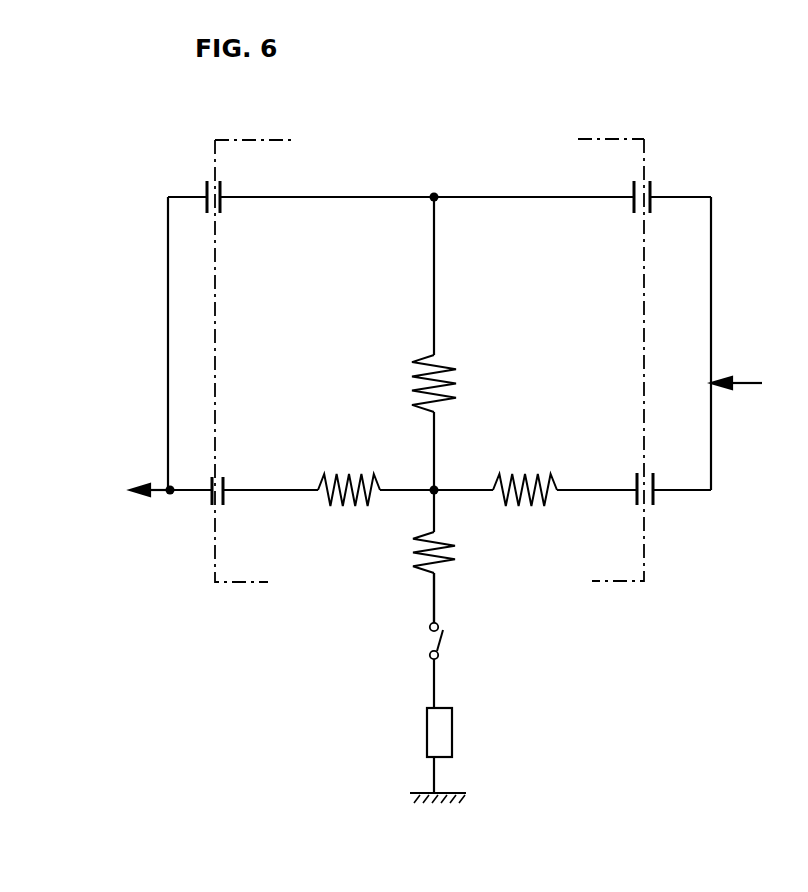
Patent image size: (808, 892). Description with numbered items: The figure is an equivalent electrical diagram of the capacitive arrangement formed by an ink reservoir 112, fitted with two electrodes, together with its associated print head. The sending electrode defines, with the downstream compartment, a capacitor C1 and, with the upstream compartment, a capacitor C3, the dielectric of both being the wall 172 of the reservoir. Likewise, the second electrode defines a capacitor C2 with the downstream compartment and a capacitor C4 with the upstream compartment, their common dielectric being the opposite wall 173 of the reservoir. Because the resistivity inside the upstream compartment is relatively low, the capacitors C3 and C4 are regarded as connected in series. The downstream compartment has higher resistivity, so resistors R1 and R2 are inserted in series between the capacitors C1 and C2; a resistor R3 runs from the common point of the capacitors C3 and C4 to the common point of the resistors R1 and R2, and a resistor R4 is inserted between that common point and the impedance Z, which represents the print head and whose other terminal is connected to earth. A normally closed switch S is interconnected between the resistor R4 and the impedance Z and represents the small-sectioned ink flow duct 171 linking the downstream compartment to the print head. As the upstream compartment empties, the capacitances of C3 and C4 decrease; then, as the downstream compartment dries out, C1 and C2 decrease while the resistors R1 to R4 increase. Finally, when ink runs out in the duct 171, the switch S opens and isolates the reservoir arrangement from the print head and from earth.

The reservoir 112 is at (263, 140).
The opposite wall of the reservoir 173 is at (215, 377).
The wall of the reservoir 172 is at (644, 377).
The ink flow duct 171 is at (434, 598).
The capacitor C1 is at (655, 483).
The capacitor C2 is at (225, 486).
The capacitor C3 is at (652, 192).
The capacitor C4 is at (222, 195).
The resistor R1 is at (540, 476).
The resistor R2 is at (363, 476).
The resistor R3 is at (453, 383).
The resistor R4 is at (456, 543).
The normally closed switch S is at (442, 640).
The impedance Z is at (453, 732).